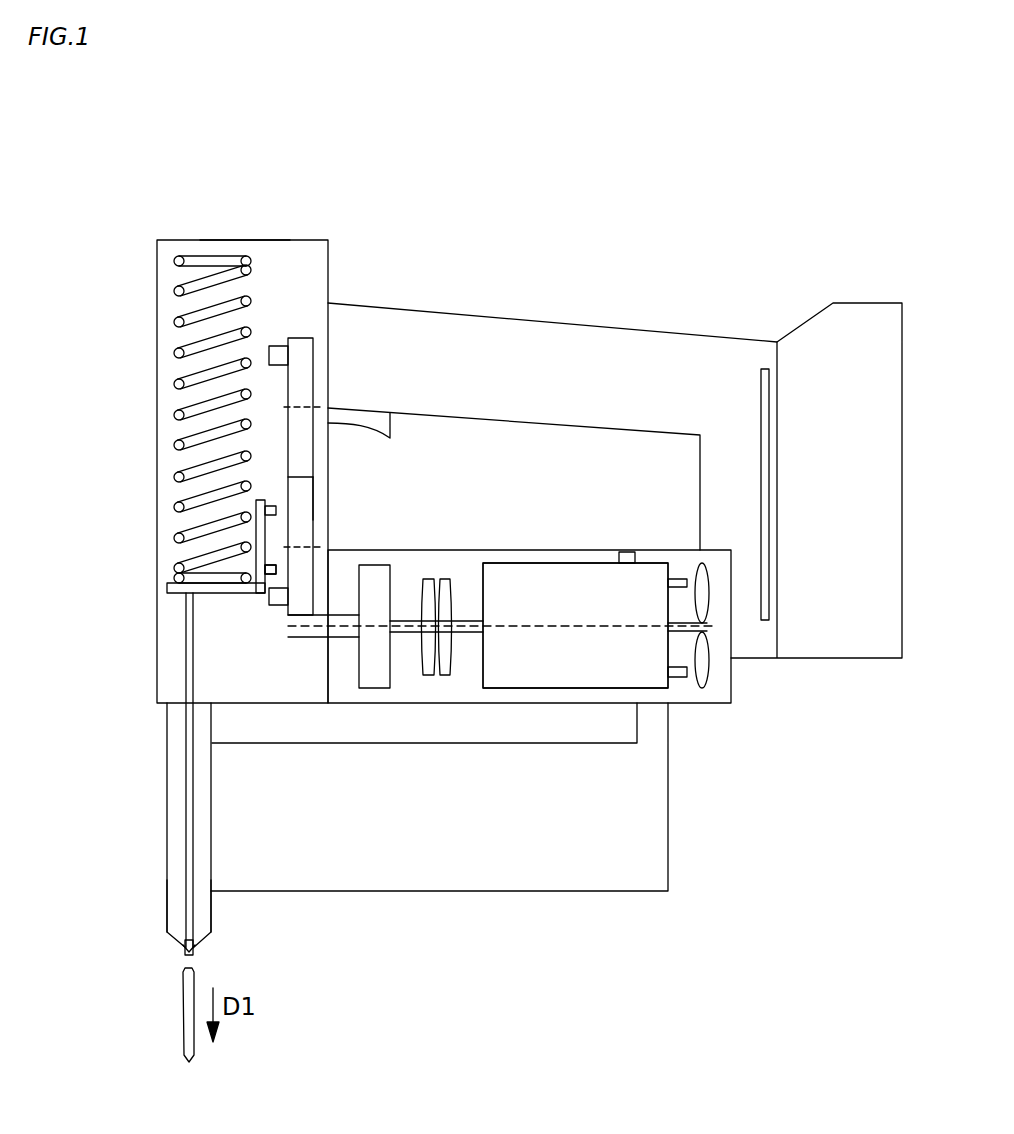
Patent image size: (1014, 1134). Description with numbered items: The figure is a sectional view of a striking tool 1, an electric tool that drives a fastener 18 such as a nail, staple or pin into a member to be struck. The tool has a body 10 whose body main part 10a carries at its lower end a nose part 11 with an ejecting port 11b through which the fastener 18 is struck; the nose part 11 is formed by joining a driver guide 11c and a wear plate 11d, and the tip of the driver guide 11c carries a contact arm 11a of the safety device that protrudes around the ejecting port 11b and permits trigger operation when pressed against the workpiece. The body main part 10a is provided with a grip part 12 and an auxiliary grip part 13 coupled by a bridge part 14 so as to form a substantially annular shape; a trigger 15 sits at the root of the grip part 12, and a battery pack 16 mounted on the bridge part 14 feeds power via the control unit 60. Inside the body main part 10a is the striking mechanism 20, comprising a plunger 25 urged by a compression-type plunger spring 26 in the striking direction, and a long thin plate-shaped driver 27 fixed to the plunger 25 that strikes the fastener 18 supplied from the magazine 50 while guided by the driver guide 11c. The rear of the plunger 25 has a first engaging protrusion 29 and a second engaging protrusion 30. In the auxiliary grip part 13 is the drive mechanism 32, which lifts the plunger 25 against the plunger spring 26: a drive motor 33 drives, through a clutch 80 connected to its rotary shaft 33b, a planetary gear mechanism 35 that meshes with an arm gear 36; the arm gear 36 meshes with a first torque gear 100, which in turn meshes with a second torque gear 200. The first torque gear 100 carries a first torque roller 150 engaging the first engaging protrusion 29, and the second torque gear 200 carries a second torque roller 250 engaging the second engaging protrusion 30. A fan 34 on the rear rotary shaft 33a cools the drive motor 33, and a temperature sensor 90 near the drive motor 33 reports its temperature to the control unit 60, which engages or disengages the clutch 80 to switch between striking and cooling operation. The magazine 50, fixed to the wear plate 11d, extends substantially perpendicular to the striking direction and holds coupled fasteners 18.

The striking tool 1 is at (657, 256).
The body 10 is at (157, 465).
The body main part 10a is at (243, 240).
The nose part 11 is at (167, 815).
The contact arm 11a is at (182, 950).
The ejecting port 11b is at (193, 946).
The driver guide 11c is at (175, 895).
The wear plate 11d is at (205, 915).
The grip part 12 is at (548, 322).
The auxiliary grip part 13 is at (585, 550).
The bridge part 14 is at (700, 476).
The trigger 15 is at (390, 430).
The battery pack 16 is at (849, 303).
The fastener 18 is at (184, 1028).
The striking mechanism 20 is at (157, 390).
The plunger 25 is at (170, 586).
The plunger spring 26 is at (174, 322).
The driver 27 is at (185, 662).
The first engaging protrusion 29 is at (276, 570).
The second engaging protrusion 30 is at (270, 506).
The drive mechanism 32 is at (473, 538).
The drive motor 33 is at (541, 575).
The rotary shaft 33a is at (677, 632).
The rotary shaft 33b is at (470, 635).
The fan 34 is at (707, 675).
The planetary gear mechanism 35 is at (378, 570).
The arm gear 36 is at (313, 640).
The magazine 50 is at (480, 891).
The control unit 60 is at (762, 388).
The clutch 80 is at (434, 580).
The temperature sensor 90 is at (628, 552).
The first torque gear 100 is at (313, 488).
The first torque roller 150 is at (276, 605).
The second torque gear 200 is at (313, 346).
The second torque roller 250 is at (278, 346).